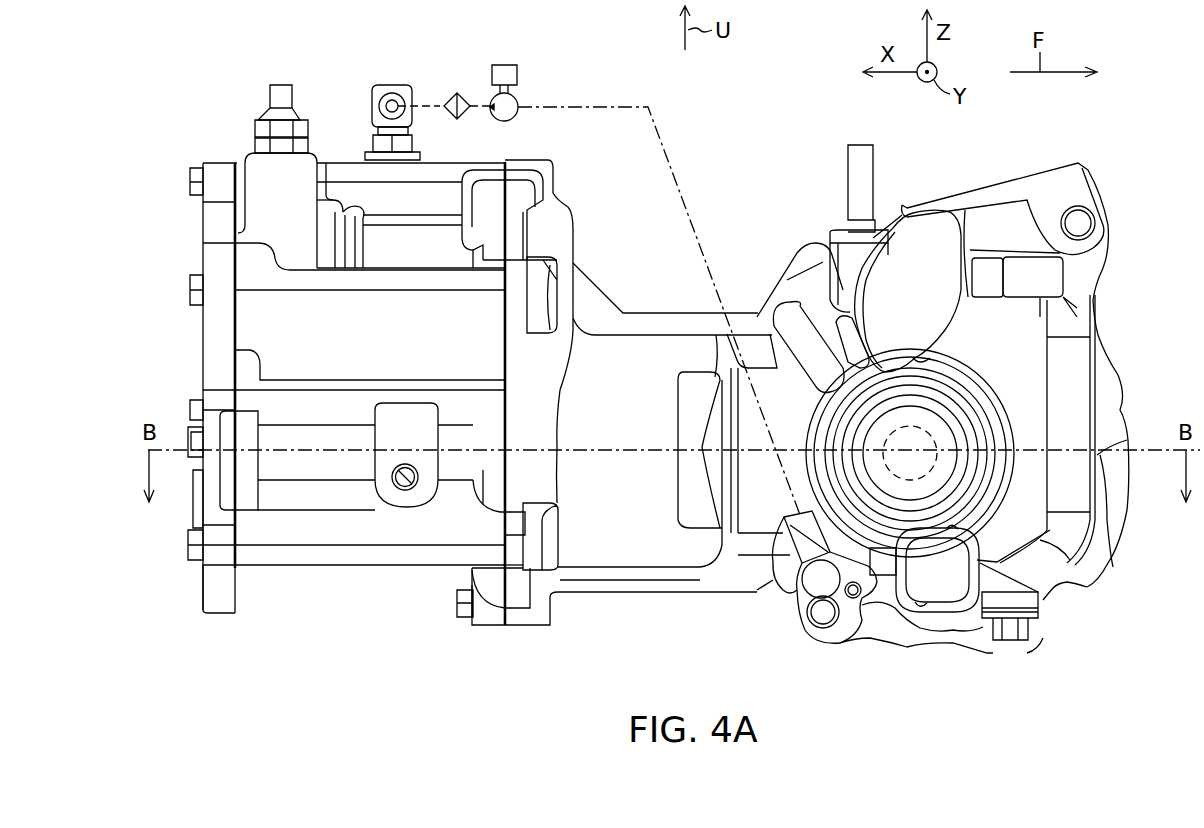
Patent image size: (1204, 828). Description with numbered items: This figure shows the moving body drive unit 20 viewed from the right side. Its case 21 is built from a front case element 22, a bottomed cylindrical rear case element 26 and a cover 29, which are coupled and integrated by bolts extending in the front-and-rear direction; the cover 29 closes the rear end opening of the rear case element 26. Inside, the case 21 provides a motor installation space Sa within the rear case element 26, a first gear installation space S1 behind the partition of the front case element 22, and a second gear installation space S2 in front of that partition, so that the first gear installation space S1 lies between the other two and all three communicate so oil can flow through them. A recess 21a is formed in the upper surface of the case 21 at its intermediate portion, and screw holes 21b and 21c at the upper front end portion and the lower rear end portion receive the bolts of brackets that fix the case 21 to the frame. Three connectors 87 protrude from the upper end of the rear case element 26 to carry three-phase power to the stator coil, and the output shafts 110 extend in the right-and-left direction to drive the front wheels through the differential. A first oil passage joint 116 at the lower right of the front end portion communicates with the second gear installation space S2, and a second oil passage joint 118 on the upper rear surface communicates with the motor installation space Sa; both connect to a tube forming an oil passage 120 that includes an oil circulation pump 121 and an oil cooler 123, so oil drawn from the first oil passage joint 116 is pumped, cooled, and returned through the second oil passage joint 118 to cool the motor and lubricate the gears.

The moving body drive unit 20 is at (947, 163).
The case 21 is at (578, 194).
The recess 21a is at (600, 292).
The screw hole 21b is at (1087, 210).
The screw hole 21c is at (412, 490).
The front case element 22 is at (970, 192).
The rear case element 26 is at (450, 165).
The cover 29 is at (215, 162).
The connector 87 is at (262, 115).
The output shaft 110 is at (955, 410).
The first oil passage joint 116 is at (770, 572).
The second oil passage joint 118 is at (385, 88).
The oil passage 120 is at (665, 137).
The oil circulation pump 121 is at (518, 100).
The oil cooler 123 is at (457, 92).
The first gear installation space S1 is at (628, 530).
The second gear installation space S2 is at (1013, 537).
The motor installation space Sa is at (310, 525).